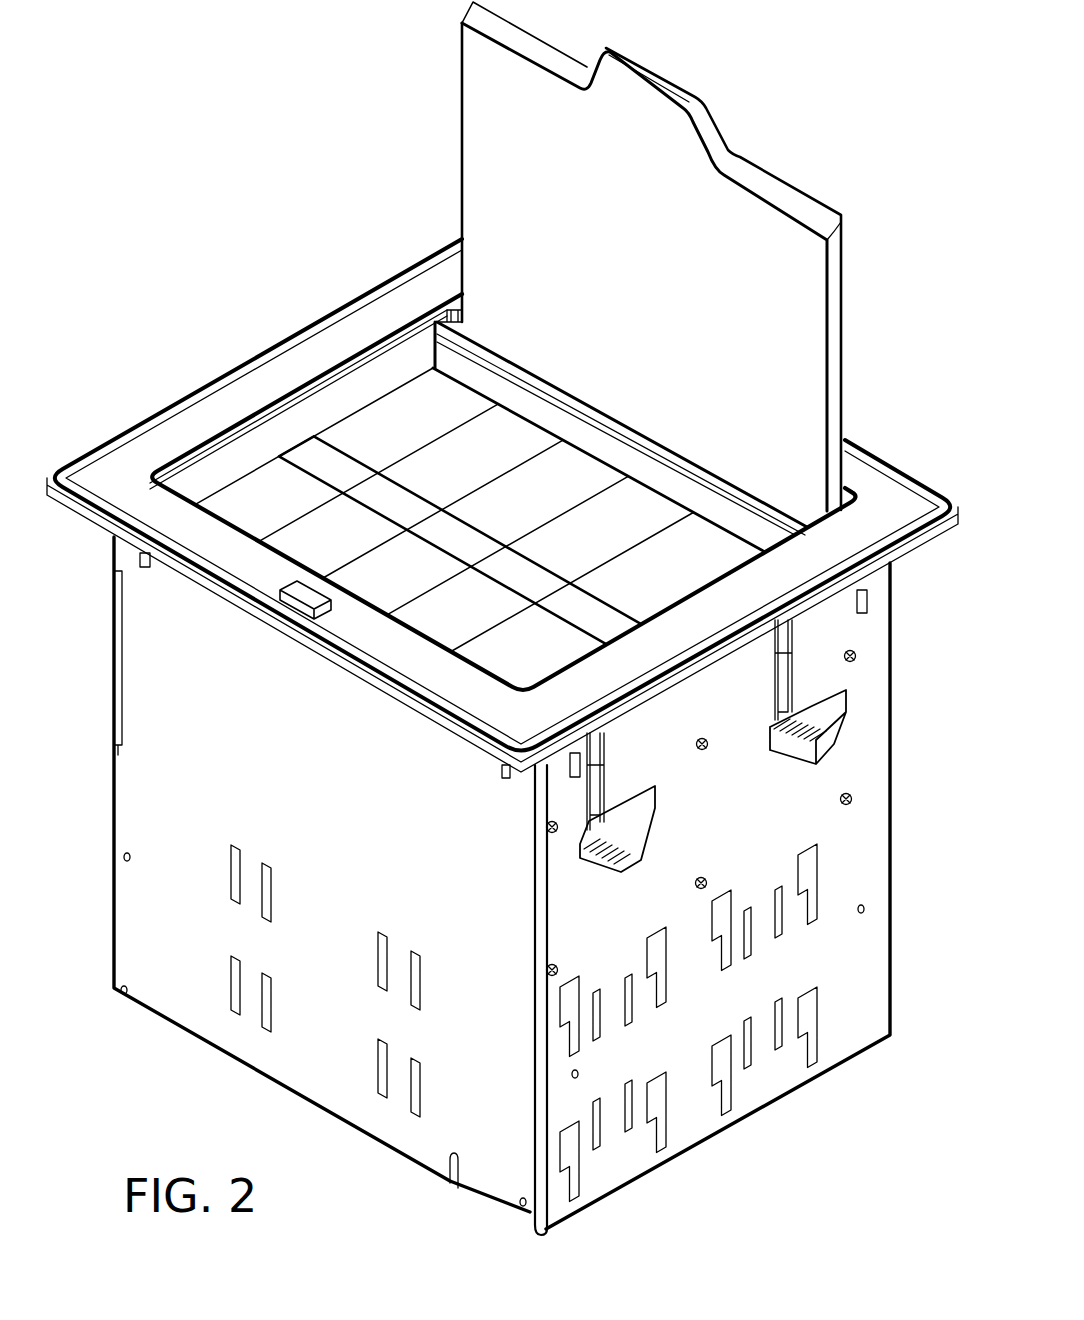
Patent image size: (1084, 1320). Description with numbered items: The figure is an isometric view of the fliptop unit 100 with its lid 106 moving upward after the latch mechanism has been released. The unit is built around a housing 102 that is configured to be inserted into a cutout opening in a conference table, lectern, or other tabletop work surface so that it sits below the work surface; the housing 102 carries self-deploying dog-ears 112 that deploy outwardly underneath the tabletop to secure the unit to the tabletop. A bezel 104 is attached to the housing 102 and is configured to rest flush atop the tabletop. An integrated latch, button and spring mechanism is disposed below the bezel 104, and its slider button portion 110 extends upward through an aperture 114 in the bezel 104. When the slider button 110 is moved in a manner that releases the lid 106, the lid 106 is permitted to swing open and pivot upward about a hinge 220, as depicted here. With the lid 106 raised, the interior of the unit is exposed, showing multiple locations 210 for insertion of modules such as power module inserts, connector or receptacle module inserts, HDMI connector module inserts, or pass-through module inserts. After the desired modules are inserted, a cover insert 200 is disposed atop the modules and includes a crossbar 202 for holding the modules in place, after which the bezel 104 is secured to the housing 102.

The fliptop unit 100 is at (403, 38).
The housing 102 is at (114, 700).
The bezel 104 is at (850, 437).
The lid 106 is at (740, 150).
The slider button portion 110 is at (309, 594).
The self-deploying dog-ears 112 is at (641, 849).
The aperture 114 is at (259, 618).
The cover insert 200 is at (362, 392).
The crossbar 202 is at (292, 503).
The locations for insertion of modules 210 is at (292, 550).
The hinge 220 is at (455, 321).